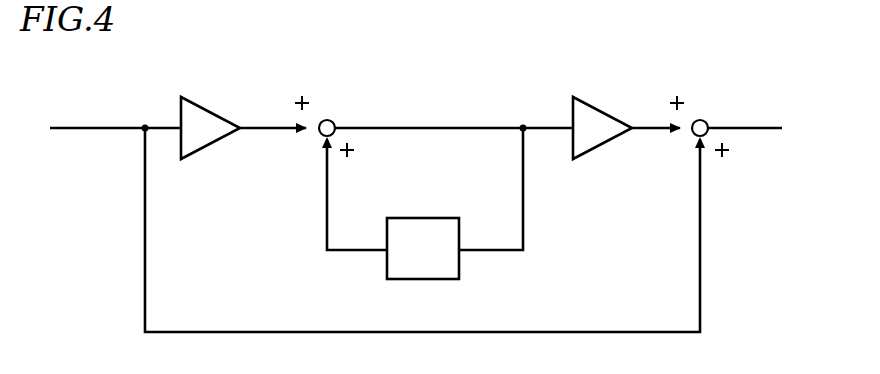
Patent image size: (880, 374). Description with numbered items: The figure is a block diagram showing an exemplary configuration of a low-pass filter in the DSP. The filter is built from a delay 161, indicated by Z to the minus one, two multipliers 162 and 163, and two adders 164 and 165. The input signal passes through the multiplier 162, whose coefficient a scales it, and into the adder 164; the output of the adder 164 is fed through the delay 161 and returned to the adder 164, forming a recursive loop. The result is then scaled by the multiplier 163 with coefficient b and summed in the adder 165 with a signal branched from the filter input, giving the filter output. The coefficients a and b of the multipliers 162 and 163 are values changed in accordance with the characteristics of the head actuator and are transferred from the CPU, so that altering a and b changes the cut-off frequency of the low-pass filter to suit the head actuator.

The delay 161 is at (460, 266).
The multiplier 162 is at (214, 142).
The multiplier 163 is at (602, 108).
The adder 164 is at (334, 120).
The adder 165 is at (707, 121).